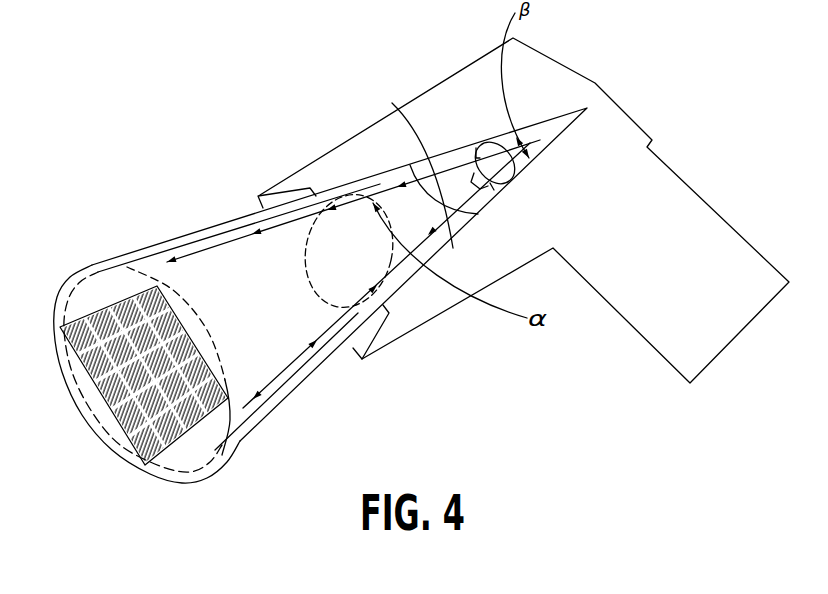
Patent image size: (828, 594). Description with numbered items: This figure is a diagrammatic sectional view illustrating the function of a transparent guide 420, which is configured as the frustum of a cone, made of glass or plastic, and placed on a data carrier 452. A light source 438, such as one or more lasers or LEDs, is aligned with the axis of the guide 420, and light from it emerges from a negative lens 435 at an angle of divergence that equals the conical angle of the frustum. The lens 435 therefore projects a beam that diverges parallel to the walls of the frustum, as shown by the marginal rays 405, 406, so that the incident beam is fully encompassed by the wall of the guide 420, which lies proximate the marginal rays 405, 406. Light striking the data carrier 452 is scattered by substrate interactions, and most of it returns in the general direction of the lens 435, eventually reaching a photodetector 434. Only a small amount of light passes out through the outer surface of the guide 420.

The marginal ray 405 is at (343, 325).
The marginal ray 406 is at (243, 202).
The transparent guide 420 is at (170, 238).
The photodetector 434 is at (480, 147).
The negative lens 435 is at (404, 164).
The light source 438 is at (490, 192).
The data carrier 452 is at (100, 307).